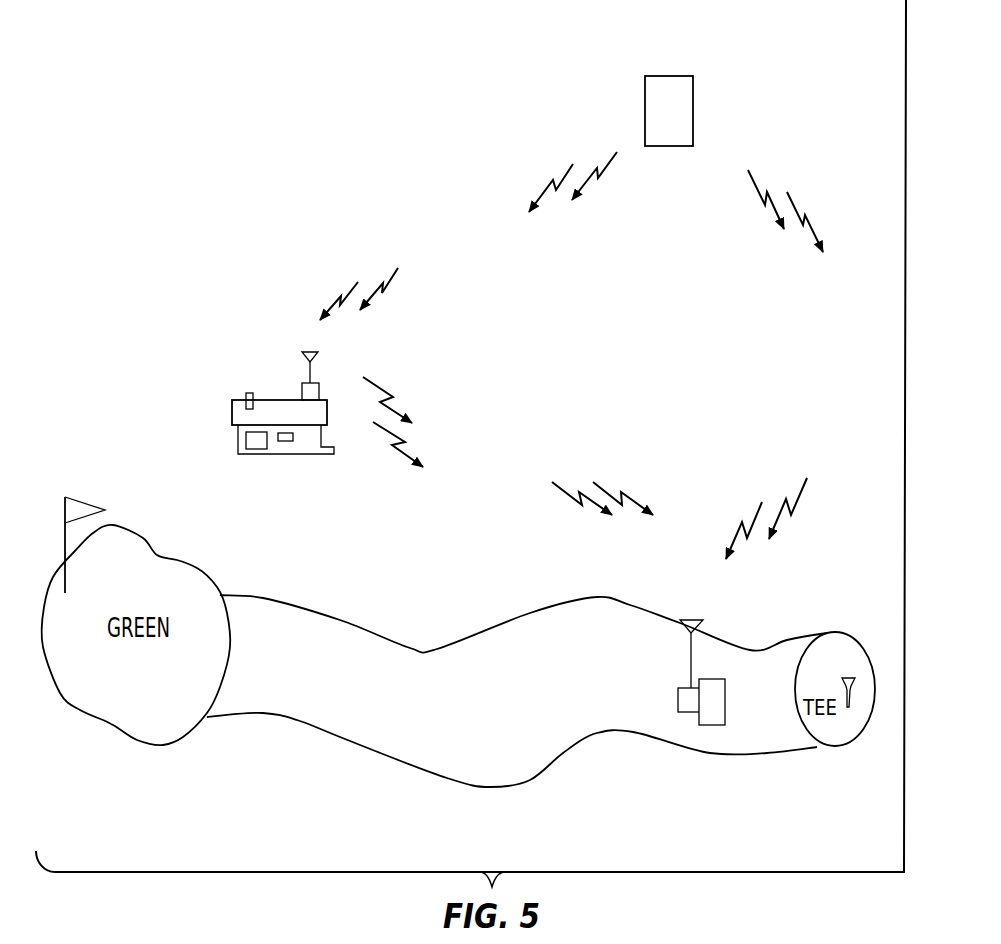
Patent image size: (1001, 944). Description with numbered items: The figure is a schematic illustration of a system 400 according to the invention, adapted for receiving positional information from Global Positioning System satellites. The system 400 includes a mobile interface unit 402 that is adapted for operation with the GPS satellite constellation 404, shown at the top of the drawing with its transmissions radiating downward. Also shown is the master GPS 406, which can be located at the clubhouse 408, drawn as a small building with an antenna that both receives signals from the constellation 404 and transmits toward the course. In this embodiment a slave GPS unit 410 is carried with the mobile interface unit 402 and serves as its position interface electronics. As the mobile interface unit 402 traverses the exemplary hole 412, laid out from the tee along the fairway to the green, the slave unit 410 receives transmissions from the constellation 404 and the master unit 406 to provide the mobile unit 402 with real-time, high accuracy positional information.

The system 400 is at (262, 113).
The mobile interface unit 402 is at (718, 717).
The GPS satellite constellation 404 is at (677, 76).
The master GPS 406 is at (300, 383).
The clubhouse 408 is at (225, 413).
The slave GPS unit 410 is at (685, 708).
The hole 412 is at (320, 703).